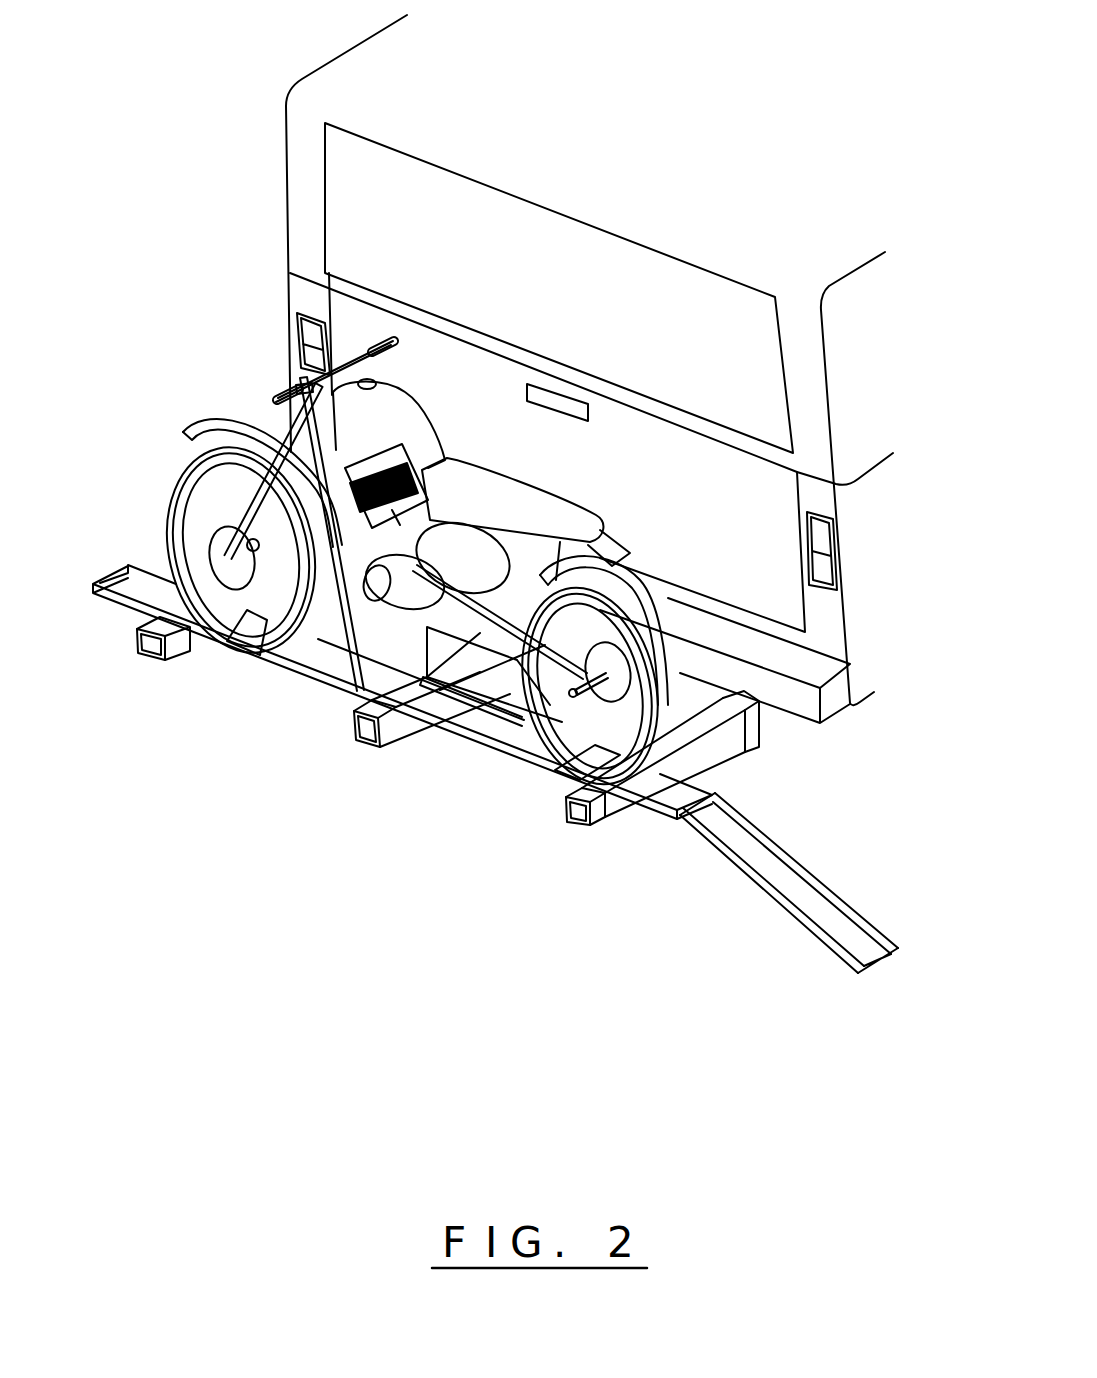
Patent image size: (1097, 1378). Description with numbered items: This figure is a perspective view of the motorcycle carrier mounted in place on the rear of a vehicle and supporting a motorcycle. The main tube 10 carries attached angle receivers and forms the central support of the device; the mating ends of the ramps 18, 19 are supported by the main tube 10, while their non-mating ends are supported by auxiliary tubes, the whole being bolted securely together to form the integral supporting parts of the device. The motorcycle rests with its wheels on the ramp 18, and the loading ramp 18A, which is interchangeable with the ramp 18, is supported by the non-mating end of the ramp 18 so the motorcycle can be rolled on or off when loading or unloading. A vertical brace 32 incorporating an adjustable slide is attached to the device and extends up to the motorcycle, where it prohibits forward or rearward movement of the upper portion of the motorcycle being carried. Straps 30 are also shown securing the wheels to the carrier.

The main tube 10 is at (367, 747).
The ramp 18 is at (480, 747).
The loading ramp 18A is at (765, 893).
The ramp 19 is at (320, 680).
The tie-down strap 30 is at (247, 657).
The vertical brace 32 is at (277, 407).